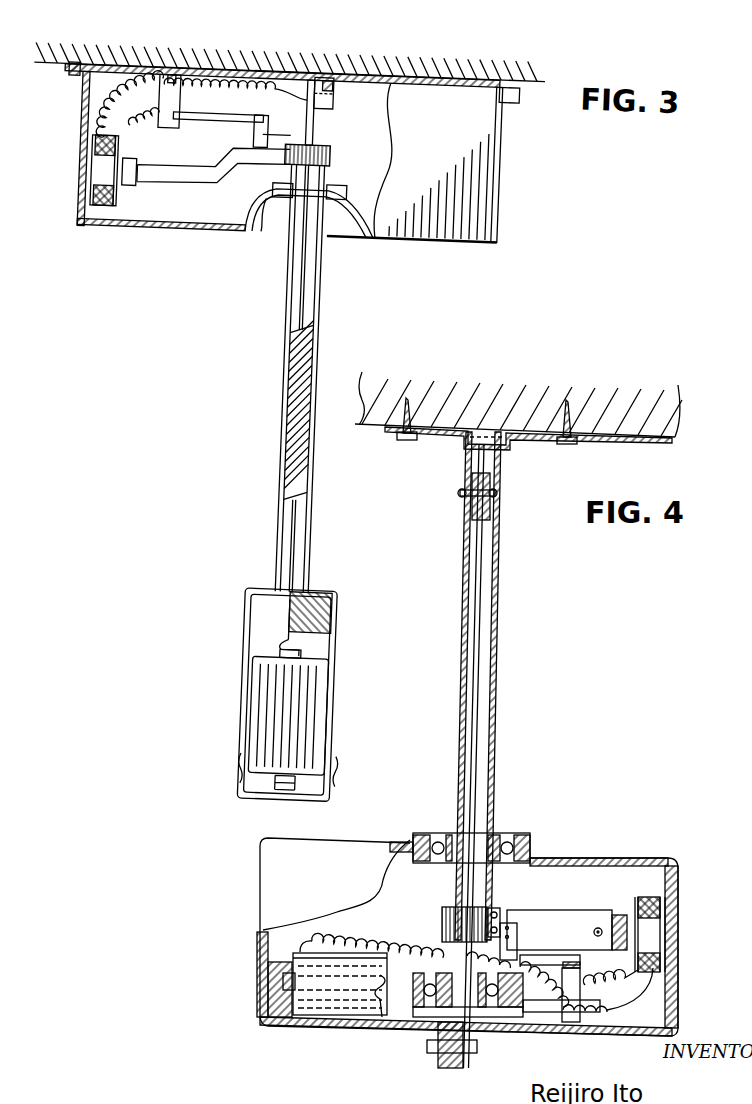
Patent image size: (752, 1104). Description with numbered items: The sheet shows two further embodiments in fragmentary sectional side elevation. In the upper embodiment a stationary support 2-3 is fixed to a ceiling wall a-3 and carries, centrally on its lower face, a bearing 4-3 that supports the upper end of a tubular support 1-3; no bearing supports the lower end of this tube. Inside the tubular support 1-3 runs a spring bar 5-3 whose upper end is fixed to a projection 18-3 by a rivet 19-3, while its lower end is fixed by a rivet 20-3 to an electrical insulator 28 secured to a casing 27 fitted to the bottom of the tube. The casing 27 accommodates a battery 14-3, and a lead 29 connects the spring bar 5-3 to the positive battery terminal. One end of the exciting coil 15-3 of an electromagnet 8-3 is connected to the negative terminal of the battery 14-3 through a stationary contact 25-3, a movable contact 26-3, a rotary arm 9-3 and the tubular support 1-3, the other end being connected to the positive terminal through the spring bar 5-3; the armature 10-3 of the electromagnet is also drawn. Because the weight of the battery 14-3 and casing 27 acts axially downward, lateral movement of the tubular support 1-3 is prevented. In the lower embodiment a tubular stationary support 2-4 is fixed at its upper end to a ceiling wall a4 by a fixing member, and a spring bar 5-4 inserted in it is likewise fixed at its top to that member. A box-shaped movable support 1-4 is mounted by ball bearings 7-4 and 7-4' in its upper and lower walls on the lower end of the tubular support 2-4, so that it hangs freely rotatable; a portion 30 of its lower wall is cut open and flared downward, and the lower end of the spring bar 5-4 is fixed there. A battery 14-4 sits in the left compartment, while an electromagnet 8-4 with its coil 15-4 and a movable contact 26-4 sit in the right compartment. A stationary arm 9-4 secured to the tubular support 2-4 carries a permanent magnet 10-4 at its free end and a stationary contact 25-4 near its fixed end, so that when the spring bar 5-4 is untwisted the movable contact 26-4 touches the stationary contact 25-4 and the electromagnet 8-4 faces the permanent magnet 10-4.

In FIG. 3, the ceiling wall a-3 is at (423, 57).
In FIG. 3, the stationary support 2-3 is at (485, 156).
In FIG. 3, the projection 18-3 is at (335, 89).
In FIG. 3, the stationary contact 25-3 is at (228, 120).
In FIG. 3, the exciting coil 15-3 is at (105, 213).
In FIG. 3, the electromagnet 8-3 is at (100, 177).
In FIG. 3, the armature 10-3 is at (131, 192).
In FIG. 3, the rotary arm 9-3 is at (191, 185).
In FIG. 3, the movable contact 26-3 is at (262, 118).
In FIG. 3, the rivet 19-3 is at (311, 93).
In FIG. 3, the spring bar 5-3 is at (313, 283).
In FIG. 3, the tubular support 1-3 is at (305, 410).
In FIG. 3, the bearing 4-3 is at (272, 201).
In FIG. 3, the casing 27 is at (267, 663).
In FIG. 3, the electrical insulator 28 is at (340, 617).
In FIG. 3, the rivet 20-3 is at (296, 613).
In FIG. 3, the lead 29 is at (292, 643).
In FIG. 4, the lead 29 is at (466, 432).
In FIG. 3, the battery 14-3 is at (334, 693).
In FIG. 4, the ceiling wall a4 is at (613, 438).
In FIG. 4, the stationary support 2-4 is at (462, 633).
In FIG. 4, the spring bar 5-4 is at (481, 676).
In FIG. 4, the ball bearing 7-4 is at (460, 819).
In FIG. 4, the movable support 1-4 is at (340, 839).
In FIG. 4, the battery 14-4 is at (328, 1000).
In FIG. 4, the ball bearing 7-4' is at (499, 1023).
In FIG. 4, the flared portion 30 is at (437, 1055).
In FIG. 4, the stationary contact 25-4 is at (518, 950).
In FIG. 4, the stationary arm 9-4 is at (568, 912).
In FIG. 4, the movable contact 26-4 is at (565, 940).
In FIG. 4, the permanent magnet 10-4 is at (617, 915).
In FIG. 4, the electromagnet 8-4 is at (653, 927).
In FIG. 4, the coil 15-4 is at (660, 966).